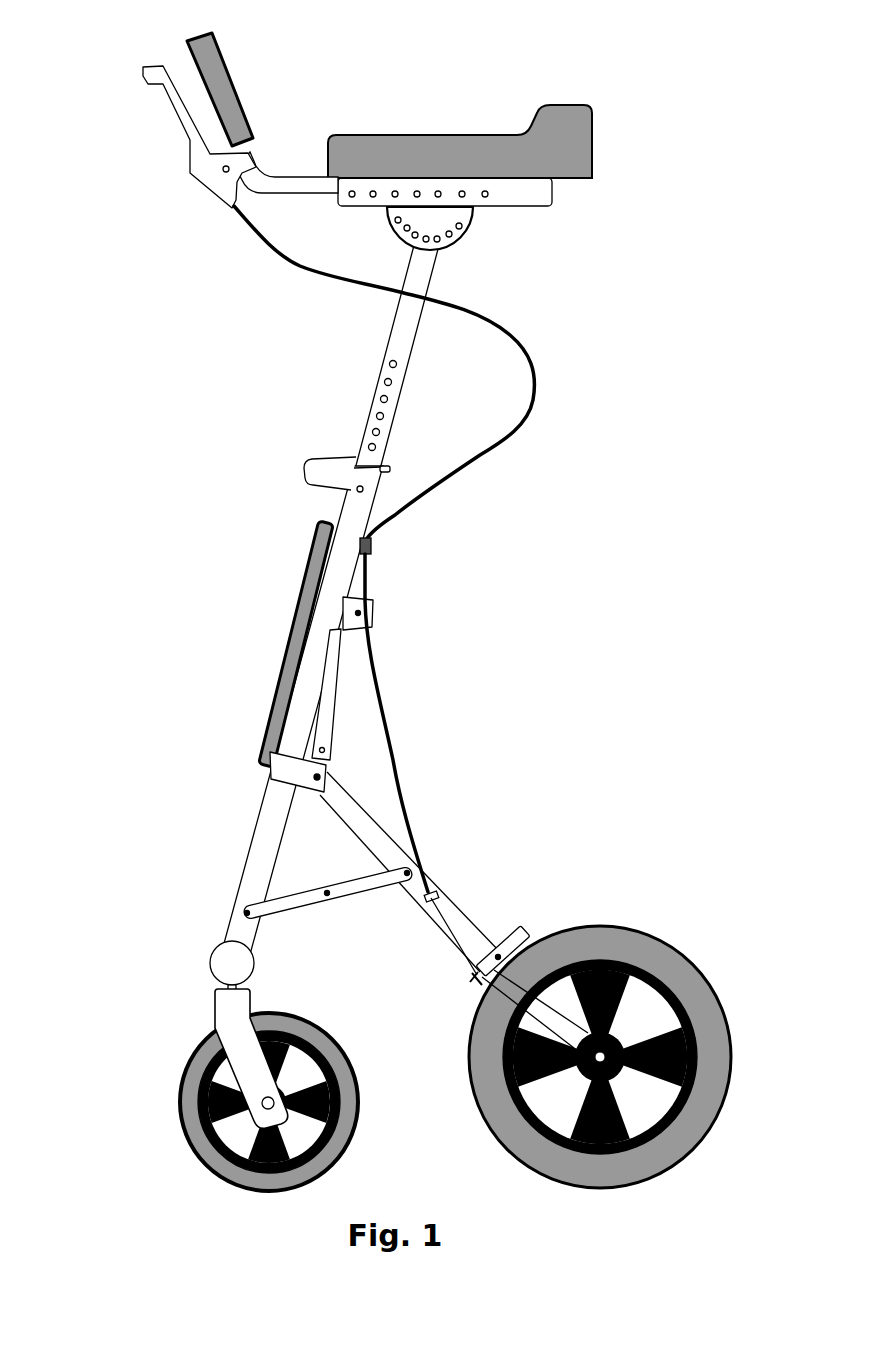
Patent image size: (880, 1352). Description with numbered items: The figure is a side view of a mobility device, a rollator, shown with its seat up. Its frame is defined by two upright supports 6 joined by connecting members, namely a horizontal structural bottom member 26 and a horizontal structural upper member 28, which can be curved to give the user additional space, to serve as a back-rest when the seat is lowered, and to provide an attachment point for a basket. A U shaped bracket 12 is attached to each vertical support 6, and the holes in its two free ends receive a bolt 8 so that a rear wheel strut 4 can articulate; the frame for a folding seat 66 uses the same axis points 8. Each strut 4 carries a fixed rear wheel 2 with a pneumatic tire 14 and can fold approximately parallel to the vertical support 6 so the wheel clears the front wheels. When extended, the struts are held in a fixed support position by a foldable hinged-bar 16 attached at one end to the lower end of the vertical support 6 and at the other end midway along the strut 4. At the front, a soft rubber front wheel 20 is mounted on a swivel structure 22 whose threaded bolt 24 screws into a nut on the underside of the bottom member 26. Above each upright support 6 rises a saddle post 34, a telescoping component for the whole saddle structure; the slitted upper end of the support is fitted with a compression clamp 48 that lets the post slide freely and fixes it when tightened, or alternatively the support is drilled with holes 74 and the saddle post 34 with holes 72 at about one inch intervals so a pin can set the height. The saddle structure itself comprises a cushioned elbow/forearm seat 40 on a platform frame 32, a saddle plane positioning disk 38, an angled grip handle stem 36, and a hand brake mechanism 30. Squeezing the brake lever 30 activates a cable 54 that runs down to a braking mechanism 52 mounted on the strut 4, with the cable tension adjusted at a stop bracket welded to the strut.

The fixed rear wheel 2 is at (630, 962).
The rear wheel strut 4 is at (378, 840).
The upright support 6 is at (342, 565).
The bolt 8 is at (319, 776).
The U shaped bracket 12 is at (283, 768).
The pneumatic tire 14 is at (702, 997).
The foldable hinged-bar 16 is at (352, 887).
The front soft rubber wheel 20 is at (188, 1098).
The swivel structure 22 is at (233, 1022).
The threaded bolt 24 is at (226, 986).
The horizontal structural bottom member 26 is at (230, 962).
The horizontal structural upper member 28 is at (320, 472).
The hand brake mechanism 30 is at (173, 103).
The platform frame 32 is at (532, 193).
The saddle post 34 is at (405, 307).
The angled grip handle stem 36 is at (270, 182).
The saddle plane positioning disk 38 is at (440, 217).
The cushioned elbow/forearm seat 40 is at (560, 140).
The compression clamp 48 is at (360, 464).
The braking mechanism 52 is at (517, 943).
The cable 54 is at (535, 395).
The folding seat 66 is at (305, 602).
The holes in saddle post 72 is at (388, 382).
The holes in vertical support 74 is at (358, 489).